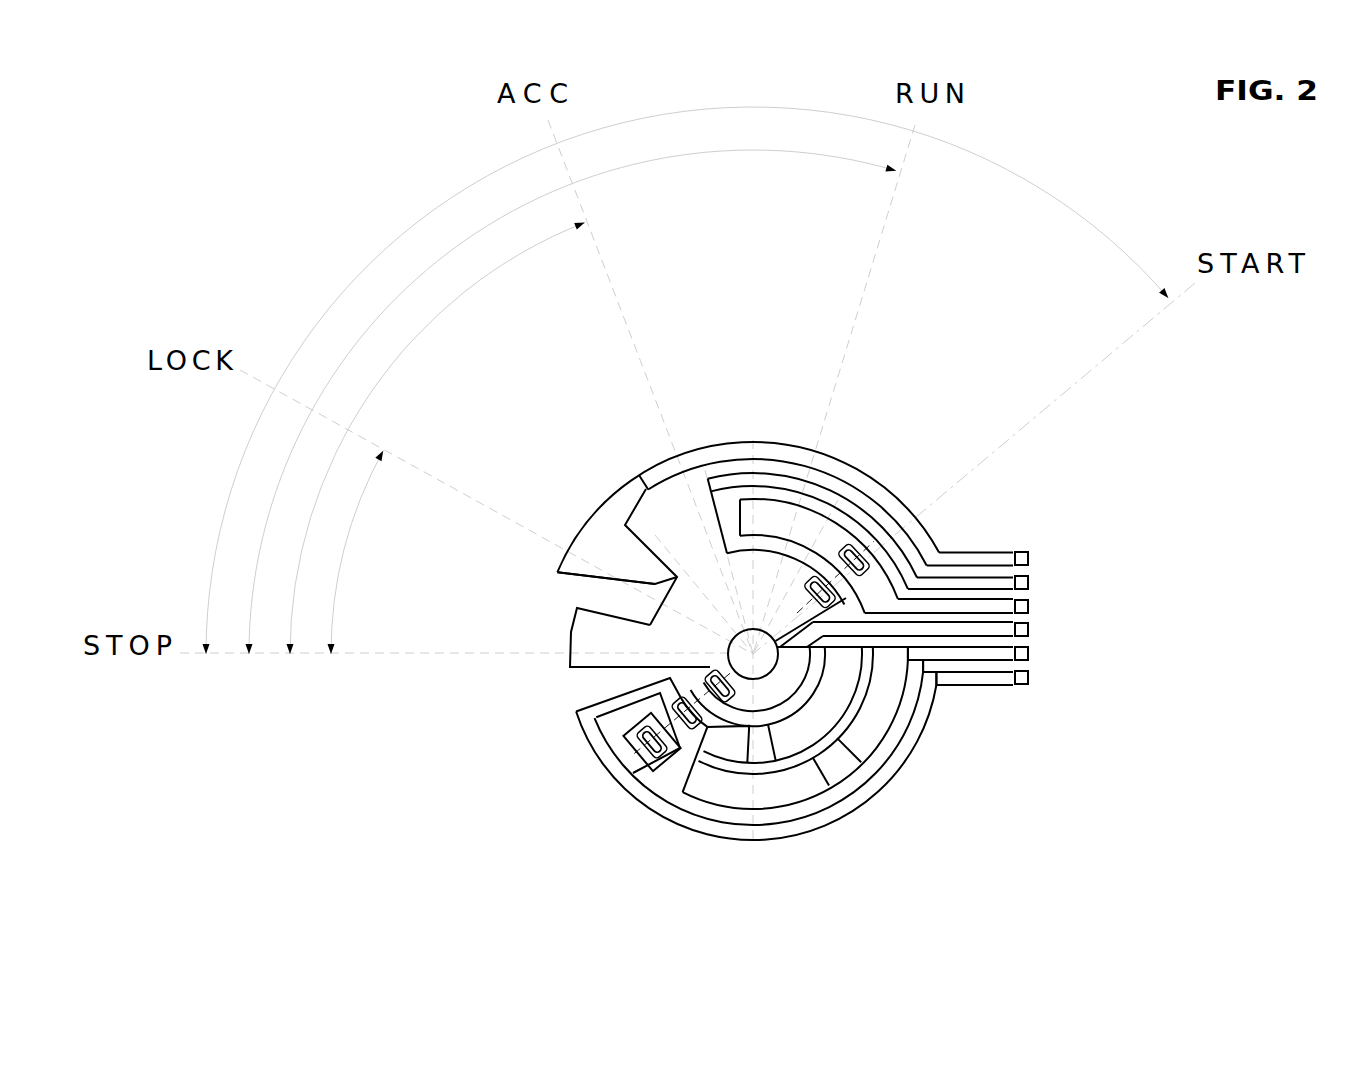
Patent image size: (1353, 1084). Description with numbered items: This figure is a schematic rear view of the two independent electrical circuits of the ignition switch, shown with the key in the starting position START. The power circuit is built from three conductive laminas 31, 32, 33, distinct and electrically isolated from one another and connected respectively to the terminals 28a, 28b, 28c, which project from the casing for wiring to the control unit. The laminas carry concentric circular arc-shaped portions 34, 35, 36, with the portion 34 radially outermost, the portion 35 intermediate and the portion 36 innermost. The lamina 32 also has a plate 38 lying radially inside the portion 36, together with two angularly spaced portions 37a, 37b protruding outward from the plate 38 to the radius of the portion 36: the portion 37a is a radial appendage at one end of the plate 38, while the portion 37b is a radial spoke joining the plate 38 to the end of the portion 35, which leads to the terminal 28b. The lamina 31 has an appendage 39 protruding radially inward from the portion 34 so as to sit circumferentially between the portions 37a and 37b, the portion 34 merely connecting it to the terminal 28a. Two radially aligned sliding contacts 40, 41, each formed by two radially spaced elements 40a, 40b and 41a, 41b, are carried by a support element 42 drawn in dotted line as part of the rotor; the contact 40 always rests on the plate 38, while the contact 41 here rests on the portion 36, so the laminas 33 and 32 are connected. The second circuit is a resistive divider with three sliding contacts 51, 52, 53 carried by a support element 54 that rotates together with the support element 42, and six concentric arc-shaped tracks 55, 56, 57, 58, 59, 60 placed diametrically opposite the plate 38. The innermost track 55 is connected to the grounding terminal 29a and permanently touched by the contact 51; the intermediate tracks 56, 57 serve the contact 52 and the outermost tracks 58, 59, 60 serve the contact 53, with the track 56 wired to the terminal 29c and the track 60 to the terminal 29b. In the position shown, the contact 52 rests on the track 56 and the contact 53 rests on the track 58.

The terminal 28a is at (1030, 558).
The terminal 28b is at (1030, 583).
The terminal 28c is at (1030, 606).
The terminal 29a is at (1030, 630).
The terminal 29b is at (1030, 653).
The terminal 29c is at (1030, 677).
The conductive lamina 31 is at (582, 568).
The conductive lamina 32 is at (952, 598).
The conductive lamina 33 is at (1003, 572).
The circular arc-shaped portion 34 is at (738, 443).
The circular arc-shaped portion 35 is at (858, 487).
The circular arc-shaped portion 36 is at (837, 500).
The portion 37a is at (590, 638).
The portion 37b is at (680, 523).
The plate 38 is at (815, 512).
The appendage 39 is at (615, 535).
The sliding contact 40 is at (893, 733).
The element 40a is at (900, 720).
The element 40b is at (880, 745).
The sliding contact 41 is at (925, 672).
The element 41a is at (965, 675).
The element 41b is at (950, 690).
The support element 42 is at (880, 545).
The sliding contact 51 is at (700, 708).
The sliding contact 52 is at (655, 740).
The sliding contact 53 is at (640, 775).
The support element 54 is at (600, 712).
The conductive track 55 is at (830, 745).
The conductive track 56 is at (745, 742).
The conductive track 57 is at (860, 745).
The conductive track 58 is at (605, 748).
The conductive track 59 is at (777, 783).
The conductive track 60 is at (872, 760).